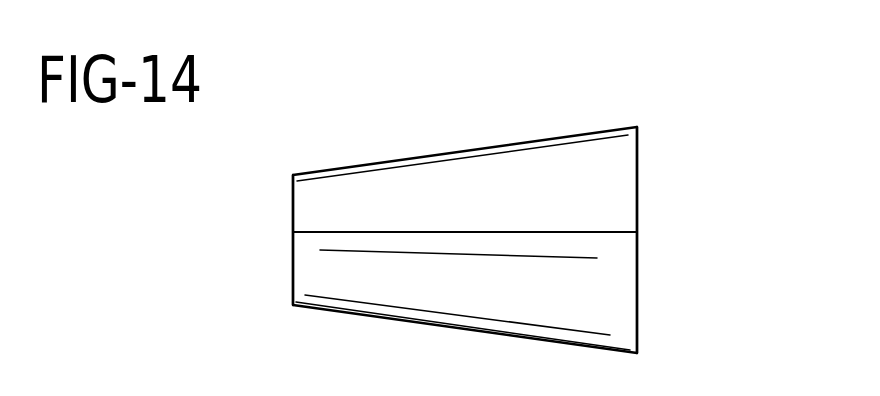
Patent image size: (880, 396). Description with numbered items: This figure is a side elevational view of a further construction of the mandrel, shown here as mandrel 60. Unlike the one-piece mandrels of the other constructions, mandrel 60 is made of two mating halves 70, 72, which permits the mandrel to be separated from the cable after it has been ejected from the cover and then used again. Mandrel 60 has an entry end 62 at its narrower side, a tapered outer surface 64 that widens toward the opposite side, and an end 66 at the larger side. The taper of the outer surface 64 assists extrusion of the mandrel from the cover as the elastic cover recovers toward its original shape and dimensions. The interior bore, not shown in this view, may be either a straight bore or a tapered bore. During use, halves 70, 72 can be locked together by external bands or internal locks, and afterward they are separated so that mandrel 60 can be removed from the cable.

The mandrel 60 is at (328, 144).
The entry end 62 is at (293, 208).
The tapered outer surface 64 is at (468, 151).
The end 66 is at (637, 297).
The mating half 70 is at (562, 190).
The mating half 72 is at (340, 268).